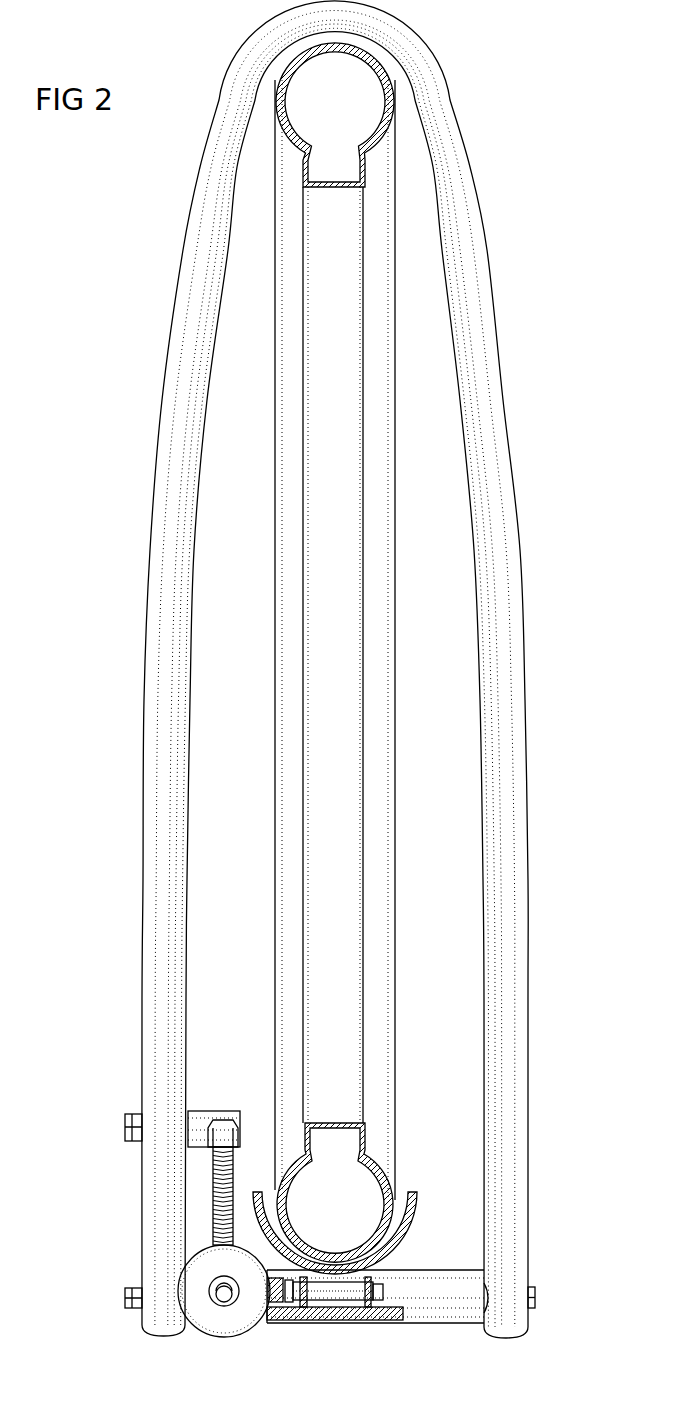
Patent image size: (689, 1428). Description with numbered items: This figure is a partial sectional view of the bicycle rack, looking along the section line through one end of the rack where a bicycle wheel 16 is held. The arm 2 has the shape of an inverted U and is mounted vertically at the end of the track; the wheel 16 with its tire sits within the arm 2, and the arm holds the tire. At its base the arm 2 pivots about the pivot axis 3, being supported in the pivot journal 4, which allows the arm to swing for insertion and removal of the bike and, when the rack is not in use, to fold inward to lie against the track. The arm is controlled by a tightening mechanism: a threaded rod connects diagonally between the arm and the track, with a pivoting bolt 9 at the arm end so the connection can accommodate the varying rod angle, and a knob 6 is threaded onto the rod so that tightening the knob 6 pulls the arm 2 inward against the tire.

The arm 2 is at (518, 504).
The pivot axis of arm 3 is at (536, 1297).
The pivot journal of arm 4 is at (433, 1283).
The knob 6 is at (205, 1275).
The pivoting bolt 9 is at (202, 1111).
The wheel 16 is at (350, 698).